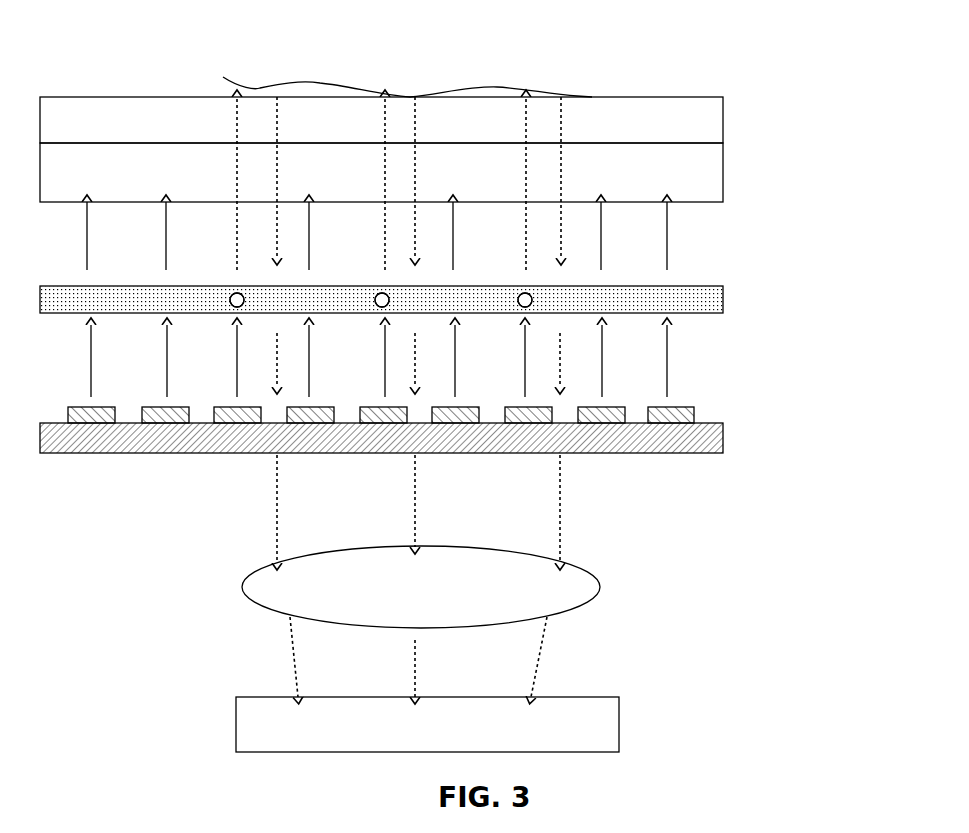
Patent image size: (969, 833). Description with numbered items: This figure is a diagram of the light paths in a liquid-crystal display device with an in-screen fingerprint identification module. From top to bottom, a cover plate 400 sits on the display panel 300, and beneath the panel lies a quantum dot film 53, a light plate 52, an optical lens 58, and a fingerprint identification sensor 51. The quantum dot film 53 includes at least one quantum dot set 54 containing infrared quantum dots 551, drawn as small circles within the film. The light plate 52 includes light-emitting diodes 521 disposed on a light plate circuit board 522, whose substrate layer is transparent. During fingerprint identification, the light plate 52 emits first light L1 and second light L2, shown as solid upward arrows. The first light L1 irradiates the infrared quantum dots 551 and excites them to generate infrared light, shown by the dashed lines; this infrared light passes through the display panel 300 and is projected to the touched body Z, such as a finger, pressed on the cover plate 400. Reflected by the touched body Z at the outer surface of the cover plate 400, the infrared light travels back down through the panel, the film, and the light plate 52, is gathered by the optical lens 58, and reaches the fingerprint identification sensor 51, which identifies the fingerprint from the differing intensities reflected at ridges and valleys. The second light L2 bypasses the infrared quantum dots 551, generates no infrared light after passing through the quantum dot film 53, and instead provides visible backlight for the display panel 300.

The cover plate 400 is at (723, 113).
The display panel 300 is at (723, 170).
The touched body Z is at (270, 88).
The quantum dot film 53 is at (723, 300).
The quantum dot set 54 is at (531, 297).
The infrared quantum dots 551 is at (381, 300).
The light plate 52 is at (457, 414).
The light-emitting diodes 521 is at (694, 408).
The light plate circuit board 522 is at (425, 438).
The first light L1 is at (167, 370).
The second light L2 is at (237, 370).
The optical lens 58 is at (600, 583).
The fingerprint identification sensor 51 is at (619, 733).